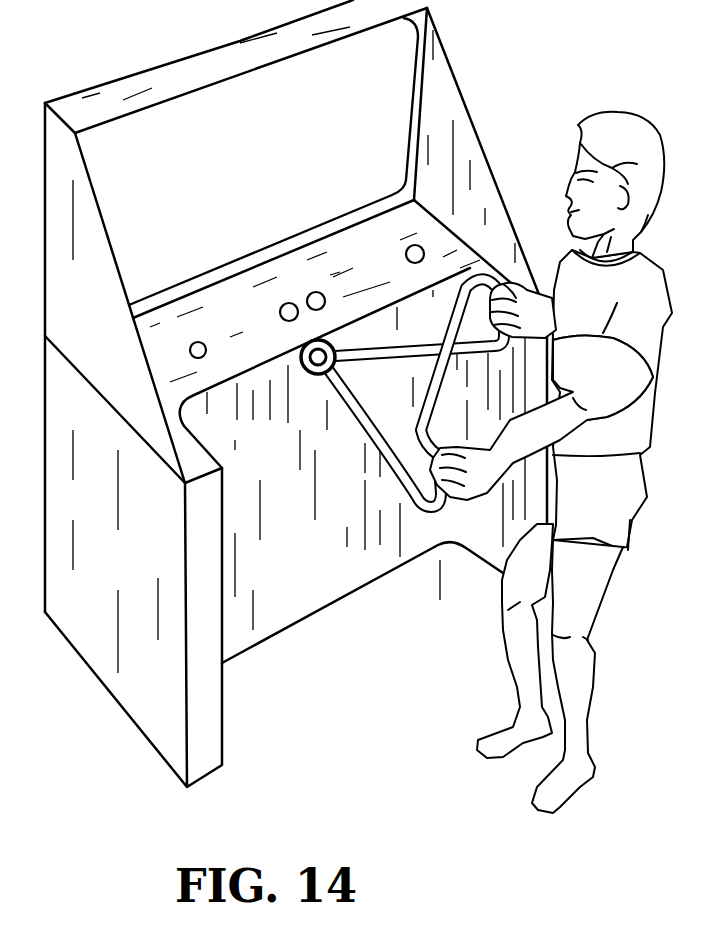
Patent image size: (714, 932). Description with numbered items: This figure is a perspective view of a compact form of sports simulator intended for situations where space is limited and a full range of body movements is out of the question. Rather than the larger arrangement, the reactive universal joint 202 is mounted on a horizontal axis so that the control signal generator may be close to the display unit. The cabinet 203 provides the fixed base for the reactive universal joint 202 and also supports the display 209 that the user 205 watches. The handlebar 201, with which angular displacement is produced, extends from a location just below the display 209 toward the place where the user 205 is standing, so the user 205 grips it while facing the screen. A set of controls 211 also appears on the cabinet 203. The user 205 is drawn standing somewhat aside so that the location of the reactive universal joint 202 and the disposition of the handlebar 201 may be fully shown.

The handlebar 201 is at (428, 509).
The reactive universal joint 202 is at (307, 369).
The cabinet 203 is at (298, 541).
The user 205 is at (577, 148).
The display 209 is at (268, 147).
The control knobs 211 is at (250, 330).